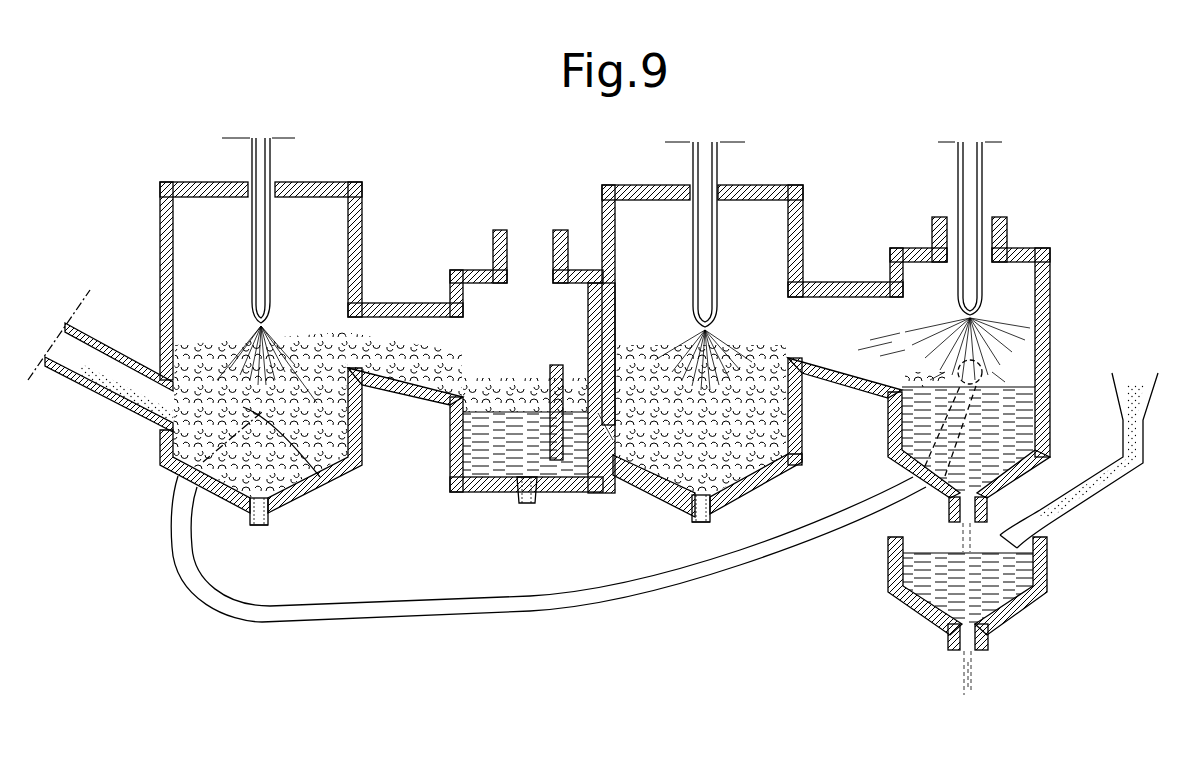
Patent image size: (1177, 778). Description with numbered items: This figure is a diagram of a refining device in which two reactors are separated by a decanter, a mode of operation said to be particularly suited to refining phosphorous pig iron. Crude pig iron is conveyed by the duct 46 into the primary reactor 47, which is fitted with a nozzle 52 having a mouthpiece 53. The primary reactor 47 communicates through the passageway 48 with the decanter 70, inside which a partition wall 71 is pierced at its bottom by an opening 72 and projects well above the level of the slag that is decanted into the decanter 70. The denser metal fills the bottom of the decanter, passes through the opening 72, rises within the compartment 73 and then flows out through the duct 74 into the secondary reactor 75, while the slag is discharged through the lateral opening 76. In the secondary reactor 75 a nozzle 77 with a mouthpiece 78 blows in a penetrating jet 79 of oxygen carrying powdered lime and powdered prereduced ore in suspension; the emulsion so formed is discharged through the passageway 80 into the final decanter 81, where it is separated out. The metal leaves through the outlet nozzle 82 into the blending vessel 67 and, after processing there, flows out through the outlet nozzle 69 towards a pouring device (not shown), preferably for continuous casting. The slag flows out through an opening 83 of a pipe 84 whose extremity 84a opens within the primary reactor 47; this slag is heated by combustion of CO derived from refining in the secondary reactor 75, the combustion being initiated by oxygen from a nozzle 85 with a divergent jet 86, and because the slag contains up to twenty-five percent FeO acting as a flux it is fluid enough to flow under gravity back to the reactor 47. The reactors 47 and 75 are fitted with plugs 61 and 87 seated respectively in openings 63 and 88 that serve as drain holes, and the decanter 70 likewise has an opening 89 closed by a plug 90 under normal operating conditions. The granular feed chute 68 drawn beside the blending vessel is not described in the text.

The duct 46 is at (96, 388).
The primary reactor 47 is at (190, 302).
The passageway 48 is at (410, 320).
The nozzle 52 is at (253, 160).
The mouthpiece 53 is at (262, 308).
The plug 61 is at (260, 527).
The opening 63 is at (247, 513).
The blending vessel 67 is at (1027, 572).
The feed chute 68 is at (1090, 497).
The outlet nozzle 69 is at (988, 642).
The decanter 70 is at (478, 290).
The partition wall 71 is at (547, 362).
The opening 72 is at (552, 473).
The compartment 73 is at (577, 453).
The duct 74 is at (620, 438).
The secondary reactor 75 is at (777, 237).
The lateral opening 76 is at (508, 378).
The nozzle 77 is at (717, 218).
The mouthpiece 78 is at (707, 313).
The penetrating jet 79 is at (713, 337).
The passageway 80 is at (853, 302).
The final decanter 81 is at (1020, 410).
The outlet nozzle 82 is at (948, 512).
The opening 83 is at (982, 372).
The pipe 84 is at (543, 600).
The extremity of the pipe 84a is at (317, 482).
The nozzle 85 is at (970, 191).
The divergent jet 86 is at (1000, 330).
The plug 87 is at (710, 520).
The opening 88 is at (688, 517).
The opening 89 is at (497, 497).
The plug 90 is at (523, 505).